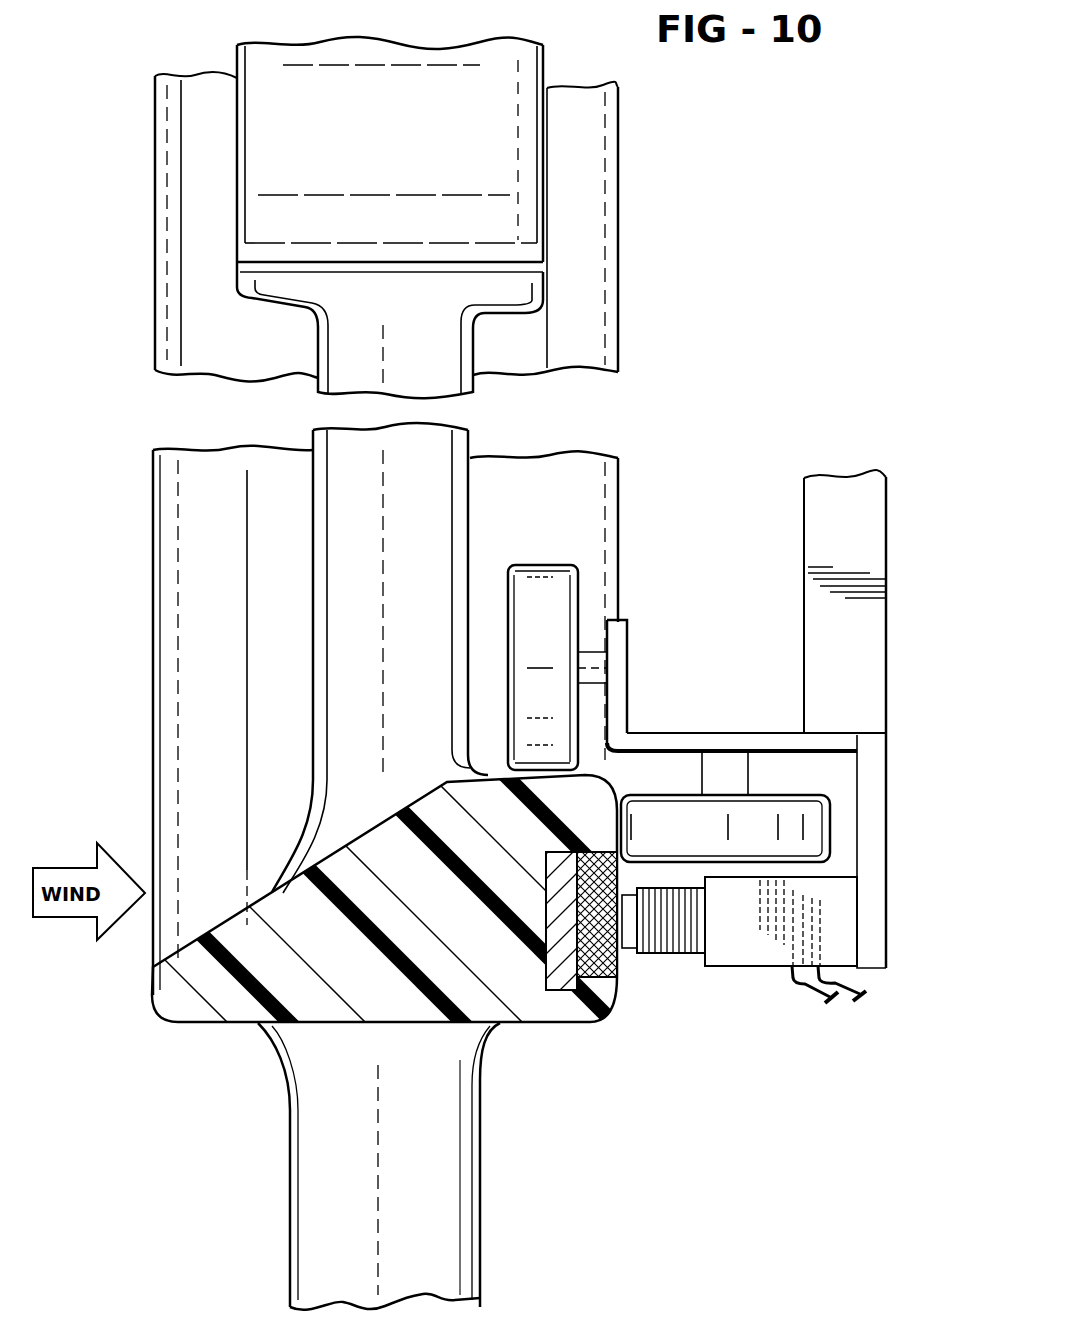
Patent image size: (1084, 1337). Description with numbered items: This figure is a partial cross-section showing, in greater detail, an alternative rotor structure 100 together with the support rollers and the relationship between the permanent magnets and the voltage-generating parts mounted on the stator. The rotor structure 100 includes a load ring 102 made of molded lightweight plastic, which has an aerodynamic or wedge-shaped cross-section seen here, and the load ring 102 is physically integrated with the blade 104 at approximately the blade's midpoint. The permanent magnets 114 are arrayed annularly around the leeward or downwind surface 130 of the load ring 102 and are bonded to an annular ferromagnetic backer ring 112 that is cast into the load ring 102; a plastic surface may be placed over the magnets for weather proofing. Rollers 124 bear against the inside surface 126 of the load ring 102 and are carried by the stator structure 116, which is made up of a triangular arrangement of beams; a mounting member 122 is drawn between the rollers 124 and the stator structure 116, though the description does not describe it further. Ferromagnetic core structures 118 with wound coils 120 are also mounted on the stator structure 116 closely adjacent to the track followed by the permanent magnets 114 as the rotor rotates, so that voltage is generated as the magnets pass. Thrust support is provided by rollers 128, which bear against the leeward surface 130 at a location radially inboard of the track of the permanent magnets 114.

The rotor structure 100 is at (658, 315).
The load ring 102 is at (540, 1027).
The blade 104 is at (236, 69).
The ferromagnetic backer ring 112 is at (546, 866).
The permanent magnets 114 is at (620, 995).
The stator structure 116 is at (804, 683).
The ferromagnetic core structures 118 is at (757, 967).
The wound coils 120 is at (681, 955).
The bracket arm 122 is at (630, 657).
The rollers 124 is at (542, 565).
The inside surface 126 is at (603, 738).
The rollers 128 is at (818, 832).
The leeward surface 130 is at (633, 867).